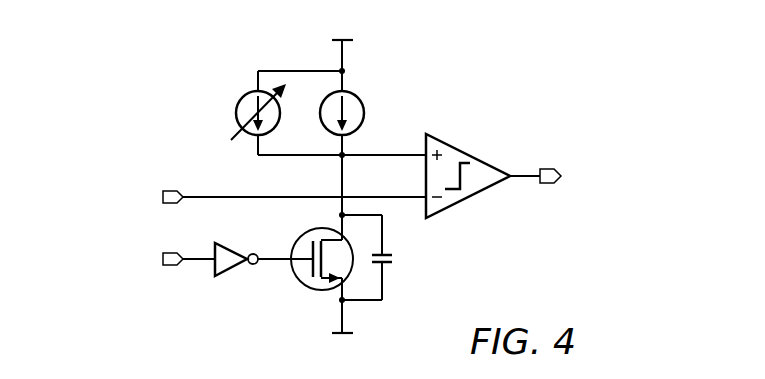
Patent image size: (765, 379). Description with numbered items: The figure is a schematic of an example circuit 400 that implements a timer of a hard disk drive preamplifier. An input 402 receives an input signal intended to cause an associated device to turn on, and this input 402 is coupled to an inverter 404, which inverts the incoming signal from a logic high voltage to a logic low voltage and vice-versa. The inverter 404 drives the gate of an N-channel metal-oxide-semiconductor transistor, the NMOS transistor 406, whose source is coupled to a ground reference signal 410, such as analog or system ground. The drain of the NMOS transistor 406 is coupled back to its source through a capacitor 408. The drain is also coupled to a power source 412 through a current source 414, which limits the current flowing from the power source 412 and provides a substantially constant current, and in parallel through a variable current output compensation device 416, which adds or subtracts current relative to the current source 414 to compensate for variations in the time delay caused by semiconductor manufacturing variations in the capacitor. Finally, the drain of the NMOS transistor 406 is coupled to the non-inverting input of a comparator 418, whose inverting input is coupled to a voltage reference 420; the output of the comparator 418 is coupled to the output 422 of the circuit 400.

The circuit 400 is at (527, 64).
The input 402 is at (165, 267).
The inverter 404 is at (240, 248).
The NMOS transistor 406 is at (302, 288).
The capacitor 408 is at (395, 259).
The reference signal PGND 410 is at (344, 317).
The power source PVDD 412 is at (343, 55).
The current source 414 is at (364, 110).
The variable current output compensation device 416 is at (237, 110).
The comparator 418 is at (463, 150).
The voltage reference VREF 420 is at (168, 188).
The output 422 is at (547, 183).